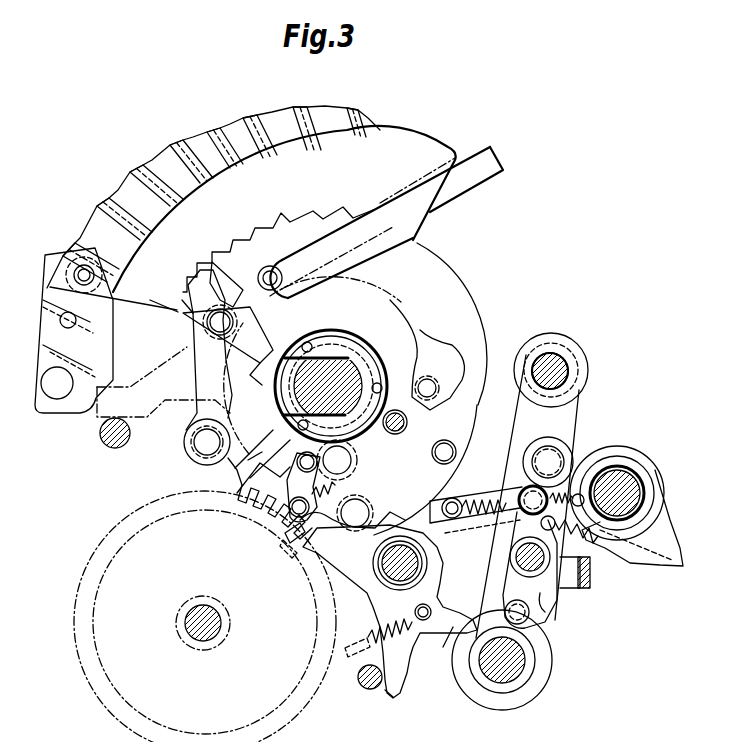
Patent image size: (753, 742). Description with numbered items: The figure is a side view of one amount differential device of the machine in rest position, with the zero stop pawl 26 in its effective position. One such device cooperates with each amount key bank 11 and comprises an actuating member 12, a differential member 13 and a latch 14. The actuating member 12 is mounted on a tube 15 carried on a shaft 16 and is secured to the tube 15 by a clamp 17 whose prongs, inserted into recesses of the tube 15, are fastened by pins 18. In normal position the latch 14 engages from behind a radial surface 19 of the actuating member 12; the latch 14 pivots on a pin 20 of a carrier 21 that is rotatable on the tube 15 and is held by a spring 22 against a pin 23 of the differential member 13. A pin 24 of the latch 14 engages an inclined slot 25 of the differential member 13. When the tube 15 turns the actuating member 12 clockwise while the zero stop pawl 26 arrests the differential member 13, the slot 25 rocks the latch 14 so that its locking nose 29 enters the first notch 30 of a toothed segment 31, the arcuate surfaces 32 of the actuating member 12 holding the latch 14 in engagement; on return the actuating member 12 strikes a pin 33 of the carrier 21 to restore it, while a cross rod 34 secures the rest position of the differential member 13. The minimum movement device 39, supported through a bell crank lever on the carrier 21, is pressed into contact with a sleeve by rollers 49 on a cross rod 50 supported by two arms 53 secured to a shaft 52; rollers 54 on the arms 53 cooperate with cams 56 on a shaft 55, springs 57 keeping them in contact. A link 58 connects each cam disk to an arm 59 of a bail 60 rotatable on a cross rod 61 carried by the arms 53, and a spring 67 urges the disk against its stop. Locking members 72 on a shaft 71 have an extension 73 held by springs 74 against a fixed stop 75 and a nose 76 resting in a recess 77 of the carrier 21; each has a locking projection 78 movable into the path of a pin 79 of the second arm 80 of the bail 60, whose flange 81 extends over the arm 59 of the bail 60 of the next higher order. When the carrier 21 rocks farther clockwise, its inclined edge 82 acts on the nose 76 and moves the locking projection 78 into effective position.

The amount key bank 11 is at (73, 252).
The actuating member 12 is at (258, 342).
The differential member 13 is at (163, 377).
The latch 14 is at (210, 350).
The tube 15 is at (355, 350).
The shaft 16 is at (360, 365).
The clamp 17 is at (342, 345).
The pins 18 is at (308, 342).
The radial surface 19 is at (247, 371).
The pin 20 is at (200, 447).
The carrier 21 is at (264, 498).
The spring 22 is at (378, 435).
The pin 23 is at (438, 380).
The pin 24 is at (200, 297).
The inclined slot 25 is at (228, 307).
The zero stop pawl 26 is at (110, 363).
The locking nose 29 is at (190, 312).
The notch 30 is at (177, 310).
The toothed segment 31 is at (423, 160).
The arcuate surfaces 32 is at (252, 460).
The pin 33 is at (310, 487).
The cross rod 34 is at (124, 438).
The minimum movement device 39 is at (462, 288).
The rollers 49 is at (518, 372).
The cross rod 50 is at (552, 360).
The shaft 52 is at (512, 665).
The arms 53 is at (525, 415).
The rollers 54 is at (565, 452).
The shaft 55 is at (640, 503).
The cams 56 is at (655, 563).
The springs 57 is at (562, 531).
The link 58 is at (510, 495).
The arm 59 is at (523, 528).
The bail 60 is at (590, 580).
The cross rod 61 is at (516, 560).
The spring 67 is at (470, 505).
The shaft 71 is at (413, 557).
The locking member 72 is at (372, 592).
The extension 73 is at (390, 697).
The springs 74 is at (373, 633).
The fixed stop 75 is at (358, 676).
The nose 76 is at (292, 548).
The recess 77 is at (352, 507).
The locking projection 78 is at (440, 645).
The pin 79 is at (525, 613).
The second arm 80 is at (543, 596).
The flange 81 is at (588, 550).
The inclined edge 82 is at (370, 498).